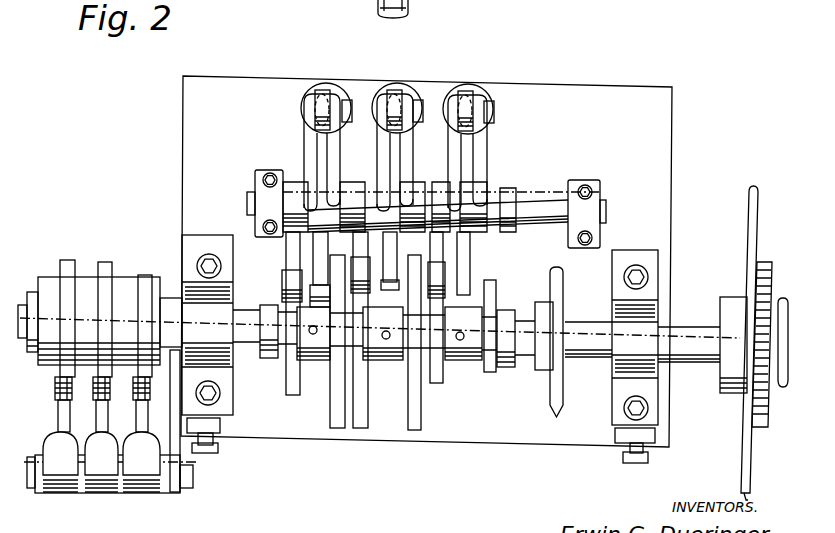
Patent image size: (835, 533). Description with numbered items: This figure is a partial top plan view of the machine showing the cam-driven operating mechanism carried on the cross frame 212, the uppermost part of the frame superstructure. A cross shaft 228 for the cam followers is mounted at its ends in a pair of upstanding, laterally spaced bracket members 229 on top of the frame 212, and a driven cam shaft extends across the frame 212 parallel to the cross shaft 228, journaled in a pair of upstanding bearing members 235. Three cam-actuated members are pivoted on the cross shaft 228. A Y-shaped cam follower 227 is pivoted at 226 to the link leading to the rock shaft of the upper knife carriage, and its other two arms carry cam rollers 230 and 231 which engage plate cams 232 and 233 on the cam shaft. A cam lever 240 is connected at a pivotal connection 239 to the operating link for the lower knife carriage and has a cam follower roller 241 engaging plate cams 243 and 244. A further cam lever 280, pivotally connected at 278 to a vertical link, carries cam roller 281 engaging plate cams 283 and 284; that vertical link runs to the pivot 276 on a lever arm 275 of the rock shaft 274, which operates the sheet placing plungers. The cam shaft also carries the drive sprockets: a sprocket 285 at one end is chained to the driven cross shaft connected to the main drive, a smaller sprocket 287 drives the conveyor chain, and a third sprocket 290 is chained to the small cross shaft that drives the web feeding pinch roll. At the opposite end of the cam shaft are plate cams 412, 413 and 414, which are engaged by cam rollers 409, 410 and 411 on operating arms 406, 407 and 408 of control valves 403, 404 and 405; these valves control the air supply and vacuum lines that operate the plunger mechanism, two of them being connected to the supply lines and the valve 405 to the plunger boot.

The cross frame 212 is at (218, 77).
The pivot 226 is at (325, 92).
The pivotal connection 239 is at (398, 92).
The pivotal connection 278 is at (470, 95).
The Y-shaped cam follower 227 is at (303, 138).
The cam lever 240 is at (380, 135).
The cam lever 280 is at (487, 145).
The cross shaft 228 is at (537, 207).
The bracket members 229 is at (262, 195).
The bearing members 235 is at (197, 272).
The cam roller 230 is at (290, 280).
The cam roller 281 is at (436, 272).
The third sprocket 290 is at (555, 280).
The cam roller 231 is at (582, 327).
The cam follower roller 241 is at (369, 296).
The plate cam 232 is at (287, 395).
The plate cam 233 is at (330, 420).
The plate cam 243 is at (362, 414).
The plate cam 244 is at (416, 423).
The plate cam 283 is at (439, 385).
The plate cam 284 is at (489, 374).
The sprocket 285 is at (758, 221).
The smaller sprocket 287 is at (784, 298).
The plate cam 414 is at (64, 262).
The plate cam 413 is at (101, 262).
The plate cam 412 is at (146, 275).
The cam roller 411 is at (56, 383).
The cam roller 410 is at (98, 393).
The cam roller 409 is at (150, 385).
The operating arm 408 is at (58, 411).
The operating arm 407 is at (101, 410).
The operating arm 406 is at (144, 420).
The control valve 405 is at (61, 484).
The control valve 404 is at (102, 493).
The control valve 403 is at (144, 493).
The rock shaft 274 is at (497, 12).
The lever arm 275 is at (378, 7).
The pivot 276 is at (426, 0).